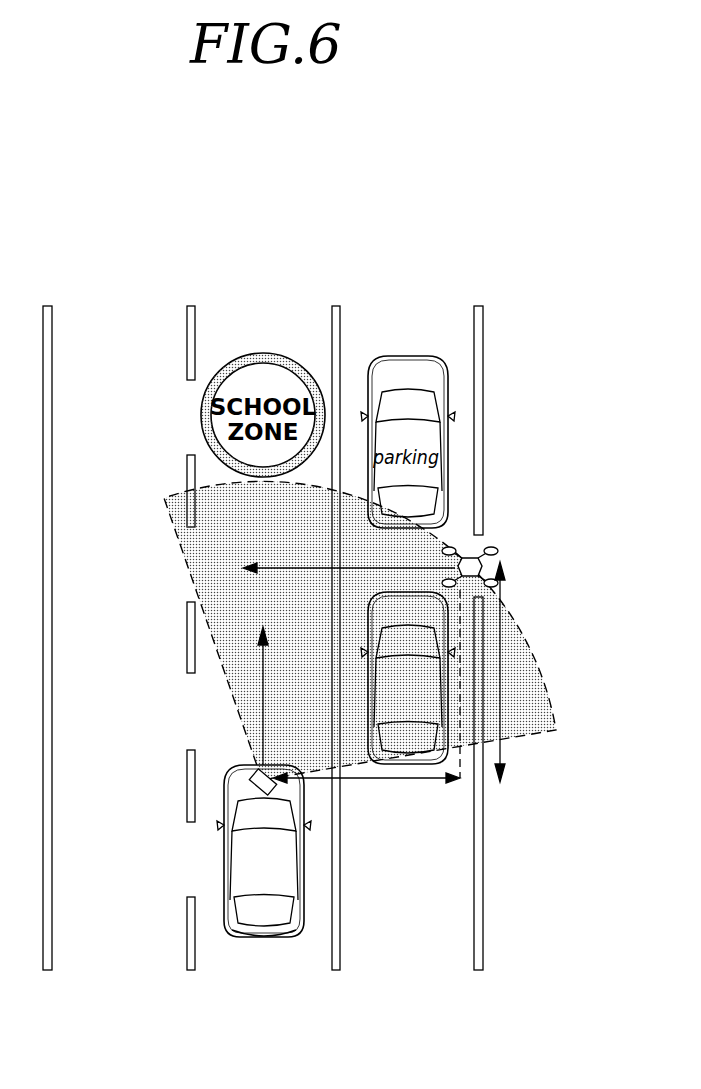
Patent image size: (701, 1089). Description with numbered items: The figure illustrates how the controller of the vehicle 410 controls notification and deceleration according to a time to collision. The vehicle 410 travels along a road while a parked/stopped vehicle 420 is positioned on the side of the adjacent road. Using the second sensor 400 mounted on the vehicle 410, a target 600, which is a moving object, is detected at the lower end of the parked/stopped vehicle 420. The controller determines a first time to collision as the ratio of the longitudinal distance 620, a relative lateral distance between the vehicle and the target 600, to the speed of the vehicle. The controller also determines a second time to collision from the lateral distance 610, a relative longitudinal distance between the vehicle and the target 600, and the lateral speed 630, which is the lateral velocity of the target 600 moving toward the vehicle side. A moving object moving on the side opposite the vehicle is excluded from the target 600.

The second sensor 400 is at (256, 783).
The vehicle 410 is at (262, 938).
The parked/stopped vehicle 420 is at (410, 766).
The target 600 is at (484, 552).
The lateral distance 610 is at (504, 669).
The longitudinal distance 620 is at (382, 781).
The lateral speed 630 is at (273, 568).